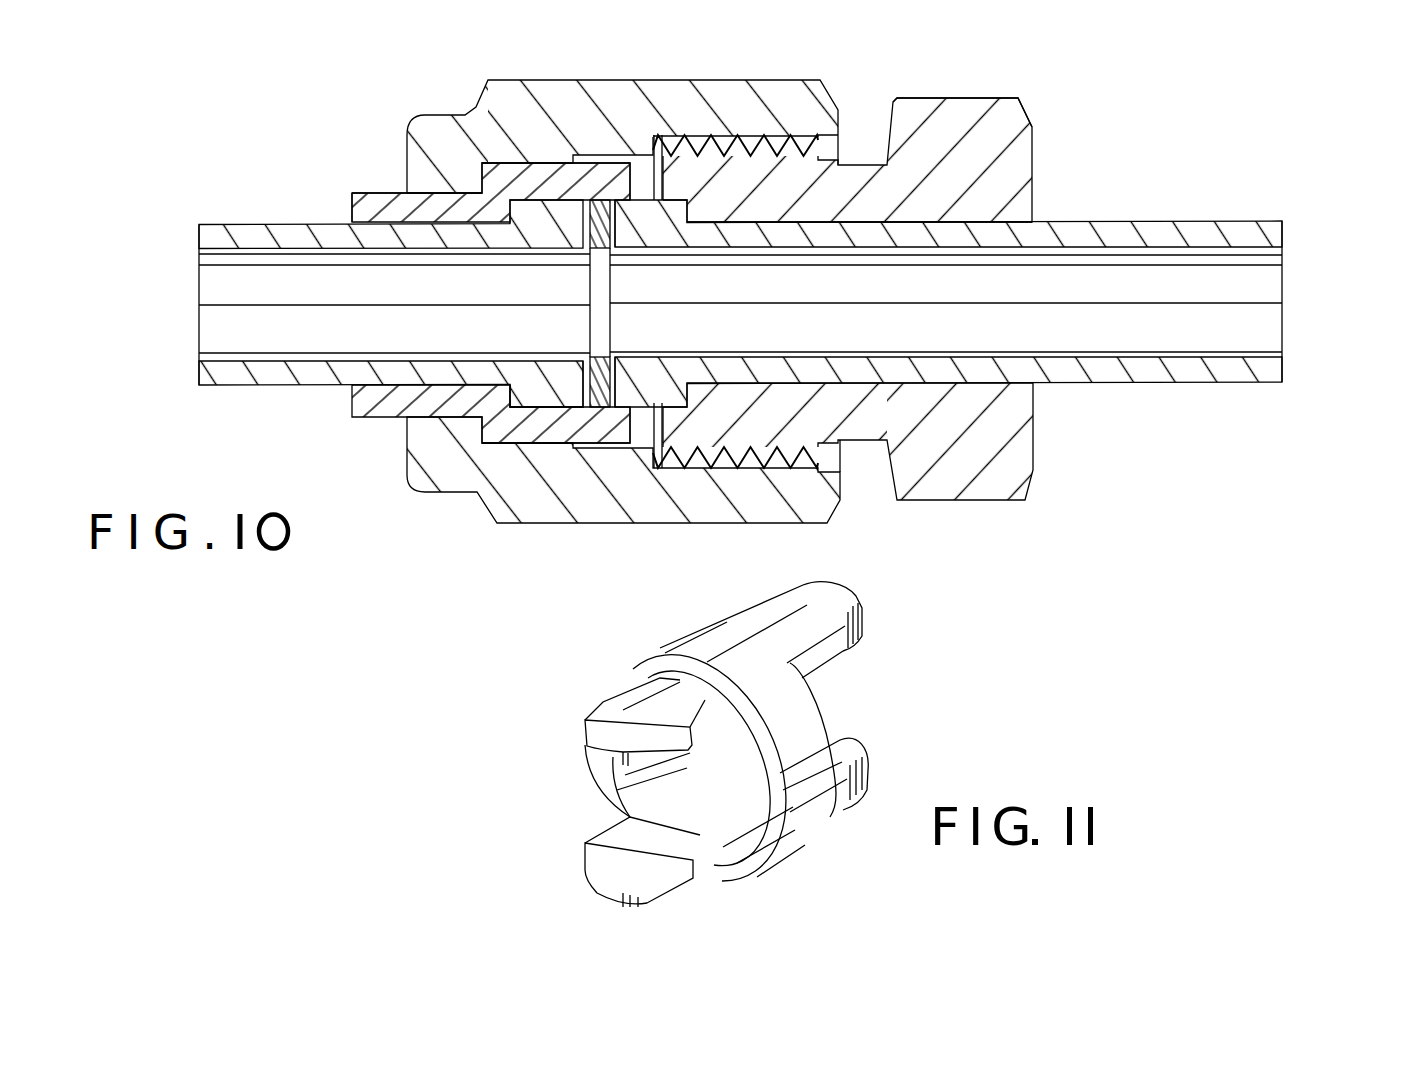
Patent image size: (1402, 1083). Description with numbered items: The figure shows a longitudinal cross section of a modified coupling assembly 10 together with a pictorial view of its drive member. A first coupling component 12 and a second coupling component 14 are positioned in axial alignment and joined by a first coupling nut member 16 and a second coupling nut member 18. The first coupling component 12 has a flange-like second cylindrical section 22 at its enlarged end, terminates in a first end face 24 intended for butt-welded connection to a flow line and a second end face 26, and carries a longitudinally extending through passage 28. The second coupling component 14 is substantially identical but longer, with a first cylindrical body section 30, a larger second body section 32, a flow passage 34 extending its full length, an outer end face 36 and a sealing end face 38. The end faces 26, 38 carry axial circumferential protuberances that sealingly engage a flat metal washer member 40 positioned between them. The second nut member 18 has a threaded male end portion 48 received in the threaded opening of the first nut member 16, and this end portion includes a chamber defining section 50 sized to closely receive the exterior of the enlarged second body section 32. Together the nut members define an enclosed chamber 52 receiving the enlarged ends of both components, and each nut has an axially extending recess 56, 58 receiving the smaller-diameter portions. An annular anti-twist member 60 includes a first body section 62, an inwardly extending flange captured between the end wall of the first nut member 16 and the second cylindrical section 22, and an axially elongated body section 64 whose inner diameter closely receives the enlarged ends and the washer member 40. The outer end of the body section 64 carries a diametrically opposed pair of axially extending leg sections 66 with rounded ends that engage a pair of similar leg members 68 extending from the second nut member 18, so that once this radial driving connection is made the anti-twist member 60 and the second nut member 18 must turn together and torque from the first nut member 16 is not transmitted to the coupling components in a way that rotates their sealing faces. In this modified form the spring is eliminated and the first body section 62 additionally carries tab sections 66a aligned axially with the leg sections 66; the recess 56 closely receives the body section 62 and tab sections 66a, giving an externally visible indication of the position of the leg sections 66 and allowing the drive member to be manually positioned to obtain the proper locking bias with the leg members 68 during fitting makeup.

In FIG. 10, the coupling assembly 10 is at (1013, 87).
In FIG. 10, the first coupling component 12 is at (212, 395).
In FIG. 10, the second coupling component 14 is at (1142, 386).
In FIG. 10, the first coupling nut member 16 is at (457, 500).
In FIG. 10, the second coupling nut member 18 is at (1027, 500).
In FIG. 10, the second cylindrical section 22 is at (572, 380).
In FIG. 10, the first end face 24 is at (198, 372).
In FIG. 10, the second end face 26 is at (630, 250).
In FIG. 10, the through passage 28 is at (220, 282).
In FIG. 10, the first cylindrical body section 30 is at (1150, 222).
In FIG. 10, the second body section 32 is at (783, 80).
In FIG. 10, the flow passage 34 is at (1245, 279).
In FIG. 10, the end face 36 is at (1285, 362).
In FIG. 10, the end face 38 is at (608, 357).
In FIG. 10, the flat metal washer member 40 is at (598, 283).
In FIG. 10, the threaded male end portion 48 is at (748, 453).
In FIG. 10, the chamber defining section 50 is at (685, 140).
In FIG. 10, the enclosed chamber 52 is at (510, 425).
In FIG. 10, the axially extending recess 56 is at (413, 203).
In FIG. 10, the axially extending recess 58 is at (880, 218).
In FIG. 10, the anti-twist member 60 is at (385, 185).
In FIG. 11, the anti-twist member 60 is at (630, 656).
In FIG. 10, the first body section 62 is at (462, 200).
In FIG. 11, the first body section 62 is at (680, 688).
In FIG. 10, the axially elongated body section 64 is at (512, 163).
In FIG. 11, the axially elongated body section 64 is at (803, 832).
In FIG. 10, the leg sections 66 is at (618, 160).
In FIG. 11, the leg sections 66 is at (840, 600).
In FIG. 10, the tab sections 66a is at (352, 195).
In FIG. 11, the tab sections 66a is at (608, 720).
In FIG. 10, the leg members 68 is at (663, 407).